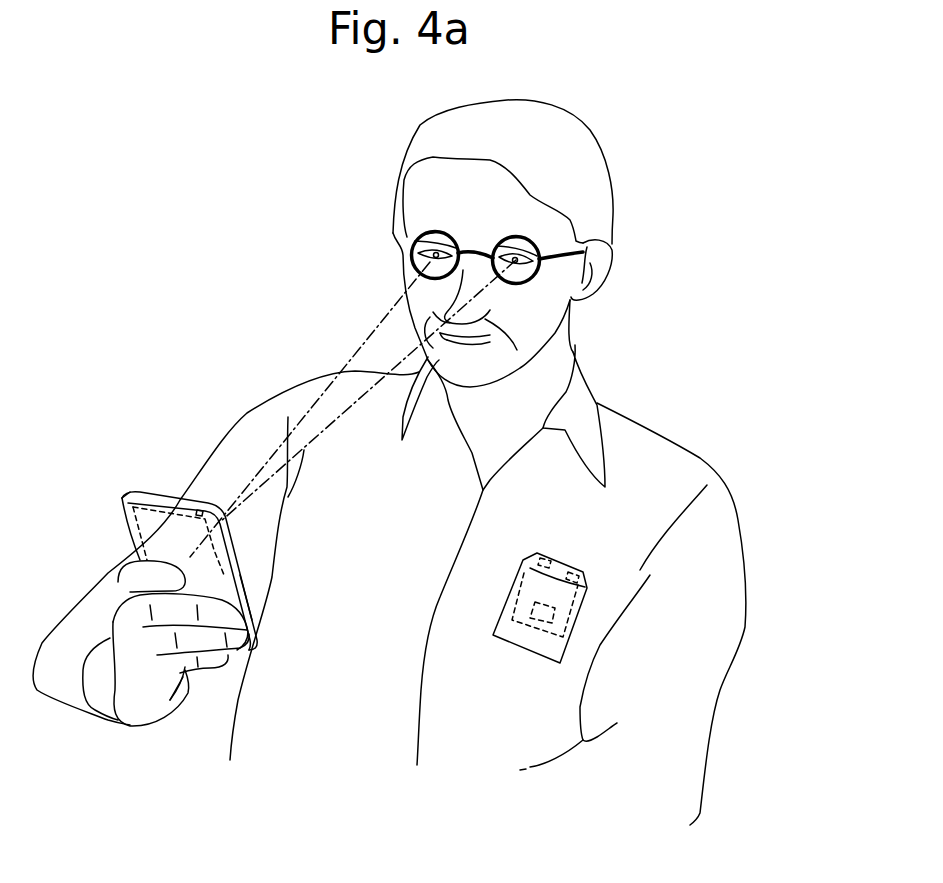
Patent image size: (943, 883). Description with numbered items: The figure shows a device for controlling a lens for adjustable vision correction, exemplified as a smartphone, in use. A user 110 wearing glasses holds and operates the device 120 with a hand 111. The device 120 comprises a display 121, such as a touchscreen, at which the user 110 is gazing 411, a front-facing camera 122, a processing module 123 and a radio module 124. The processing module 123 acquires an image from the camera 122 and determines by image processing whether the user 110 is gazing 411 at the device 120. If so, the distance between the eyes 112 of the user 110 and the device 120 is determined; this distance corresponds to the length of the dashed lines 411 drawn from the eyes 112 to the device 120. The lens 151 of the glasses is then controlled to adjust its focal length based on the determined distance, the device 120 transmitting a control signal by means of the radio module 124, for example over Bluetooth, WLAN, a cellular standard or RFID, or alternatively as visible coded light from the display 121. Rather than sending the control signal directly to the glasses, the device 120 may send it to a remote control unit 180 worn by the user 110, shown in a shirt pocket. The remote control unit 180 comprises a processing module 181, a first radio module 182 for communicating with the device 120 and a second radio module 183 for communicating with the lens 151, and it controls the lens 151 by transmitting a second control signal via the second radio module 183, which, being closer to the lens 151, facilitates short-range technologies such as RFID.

The user 110 is at (700, 462).
The hand 111 is at (153, 680).
The eyes 112 is at (412, 256).
The device 120 is at (133, 533).
The display 121 is at (255, 576).
The front-facing camera 122 is at (163, 506).
The processing module 123 is at (199, 506).
The radio module 124 is at (115, 502).
The lens 151 is at (432, 233).
The remote control unit 180 is at (564, 621).
The processing module 181 is at (535, 624).
The first radio module 182 is at (576, 571).
The second radio module 183 is at (544, 557).
The gazing 411 is at (396, 367).